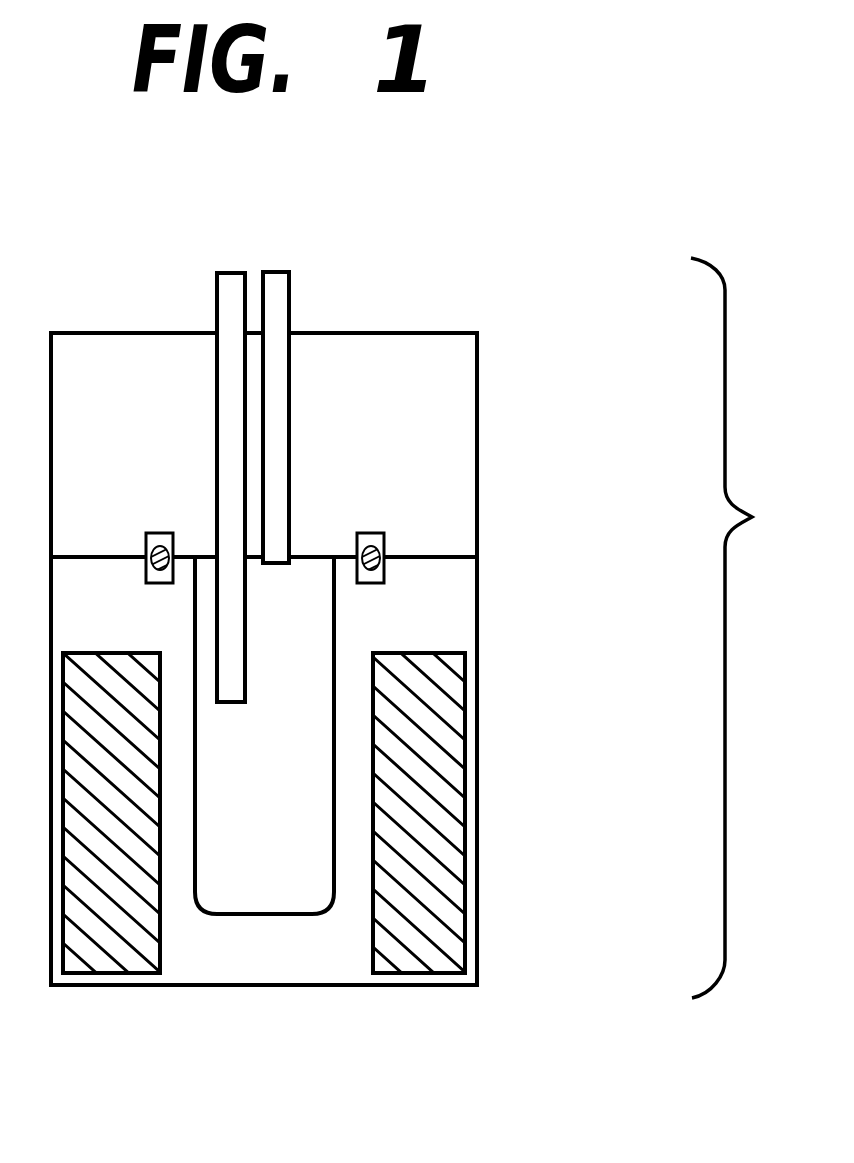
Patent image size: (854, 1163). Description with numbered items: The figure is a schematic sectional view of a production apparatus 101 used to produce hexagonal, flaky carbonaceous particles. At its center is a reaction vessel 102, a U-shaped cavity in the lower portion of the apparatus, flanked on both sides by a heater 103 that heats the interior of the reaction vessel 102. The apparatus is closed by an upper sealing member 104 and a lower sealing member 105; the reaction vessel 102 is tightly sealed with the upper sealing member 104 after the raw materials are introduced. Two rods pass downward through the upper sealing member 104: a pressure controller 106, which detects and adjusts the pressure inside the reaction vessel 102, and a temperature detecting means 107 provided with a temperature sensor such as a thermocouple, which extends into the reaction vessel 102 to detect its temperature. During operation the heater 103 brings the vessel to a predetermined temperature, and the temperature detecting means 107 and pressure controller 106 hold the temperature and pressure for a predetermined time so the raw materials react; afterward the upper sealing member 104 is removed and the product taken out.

The production apparatus 101 is at (755, 628).
The reaction vessel 102 is at (308, 873).
The heater 103 is at (435, 800).
The upper sealing member 104 is at (450, 448).
The lower sealing member 105 is at (450, 610).
The pressure controller 106 is at (272, 302).
The temperature detecting means 107 is at (228, 325).